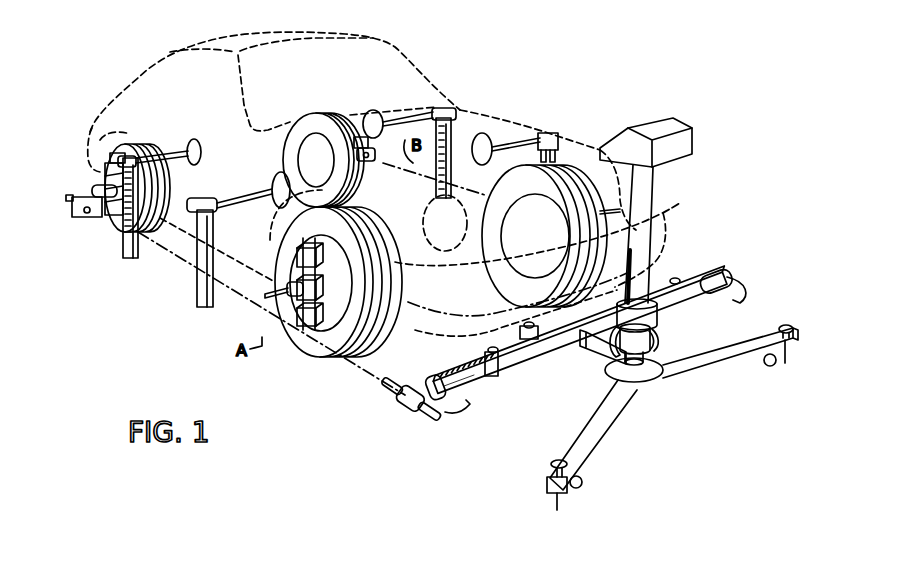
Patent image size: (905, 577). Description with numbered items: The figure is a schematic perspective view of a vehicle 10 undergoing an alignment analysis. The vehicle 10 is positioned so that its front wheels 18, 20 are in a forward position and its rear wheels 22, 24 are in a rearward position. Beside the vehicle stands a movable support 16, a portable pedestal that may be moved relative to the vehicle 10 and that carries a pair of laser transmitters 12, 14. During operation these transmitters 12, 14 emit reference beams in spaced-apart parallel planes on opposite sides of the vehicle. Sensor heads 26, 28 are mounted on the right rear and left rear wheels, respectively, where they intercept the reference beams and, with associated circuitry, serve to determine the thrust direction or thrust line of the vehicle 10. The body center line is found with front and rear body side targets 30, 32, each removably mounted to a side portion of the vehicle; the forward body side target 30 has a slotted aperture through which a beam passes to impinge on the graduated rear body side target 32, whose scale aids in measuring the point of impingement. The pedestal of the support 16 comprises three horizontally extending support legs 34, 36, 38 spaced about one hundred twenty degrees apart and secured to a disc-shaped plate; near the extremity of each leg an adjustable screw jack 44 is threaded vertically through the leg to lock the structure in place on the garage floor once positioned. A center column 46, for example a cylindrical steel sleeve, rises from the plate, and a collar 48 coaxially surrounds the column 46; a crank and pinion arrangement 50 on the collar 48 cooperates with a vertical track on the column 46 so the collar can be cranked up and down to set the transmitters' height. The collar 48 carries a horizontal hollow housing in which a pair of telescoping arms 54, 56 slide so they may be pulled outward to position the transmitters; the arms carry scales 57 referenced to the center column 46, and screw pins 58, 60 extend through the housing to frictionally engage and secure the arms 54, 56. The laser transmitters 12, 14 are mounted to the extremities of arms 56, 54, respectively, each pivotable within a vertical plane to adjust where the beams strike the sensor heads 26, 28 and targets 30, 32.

The vehicle 10 is at (498, 72).
The laser transmitter 12 is at (405, 405).
The laser transmitter 14 is at (712, 264).
The movable support 16 is at (670, 349).
The front wheel 18 is at (347, 343).
The front wheel 20 is at (572, 165).
The rear wheel 22 is at (143, 150).
The rear wheel 24 is at (325, 112).
The sensor head 26 is at (72, 206).
The sensor head 28 is at (366, 140).
The forward body side target 30 is at (205, 308).
The rear body side target 32 is at (130, 259).
The support leg 34 is at (578, 355).
The support leg 36 is at (718, 362).
The support leg 38 is at (600, 440).
The adjustable screw jack 44 is at (553, 464).
The center column 46 is at (652, 217).
The collar 48 is at (662, 318).
The crank and pinion arrangement 50 is at (624, 383).
The telescoping arm 54 is at (700, 263).
The telescoping arm 56 is at (478, 410).
The scale 57 is at (470, 380).
The screw pin 58 is at (675, 278).
The screw pin 60 is at (488, 357).